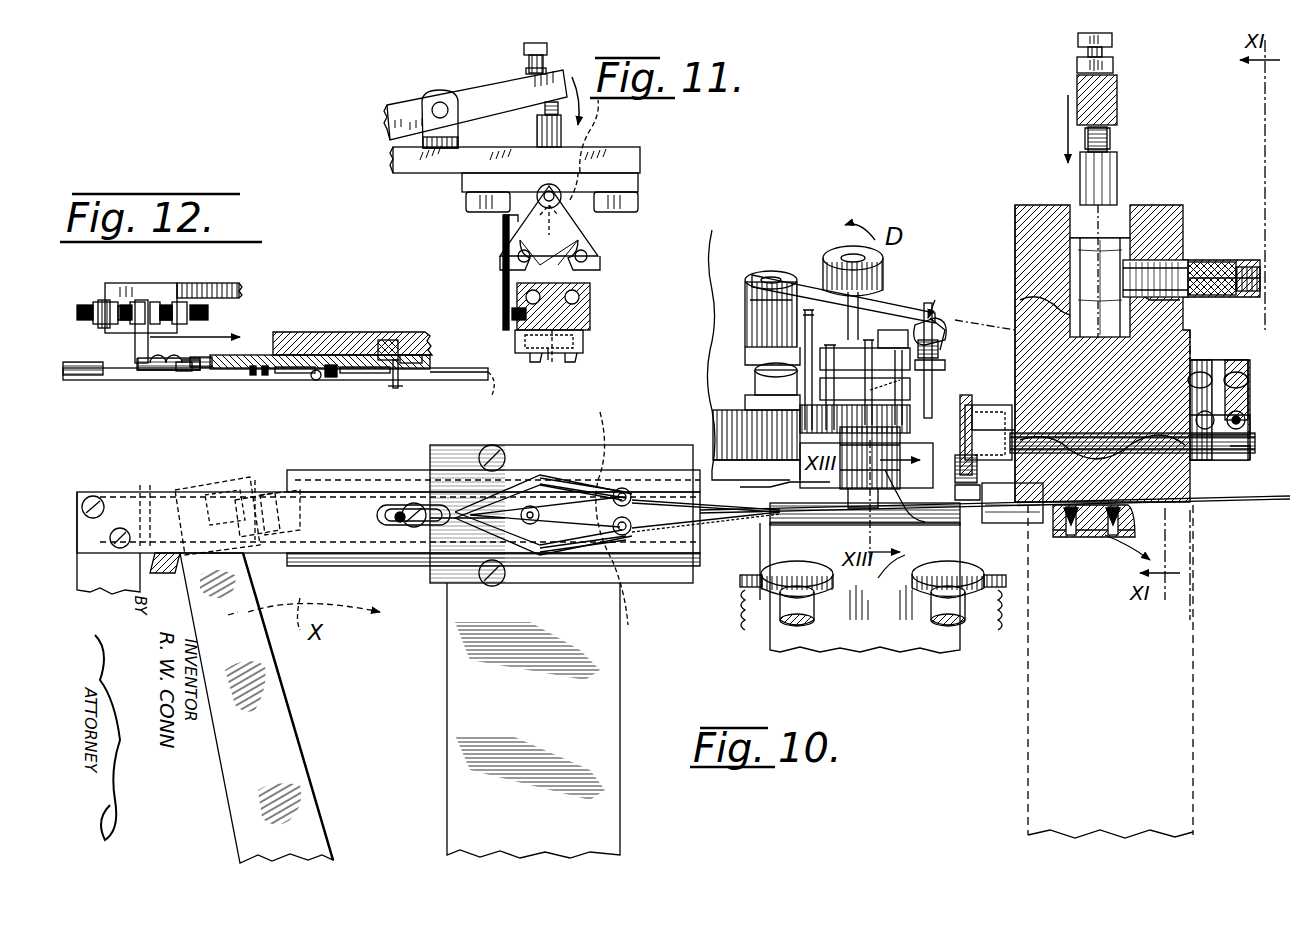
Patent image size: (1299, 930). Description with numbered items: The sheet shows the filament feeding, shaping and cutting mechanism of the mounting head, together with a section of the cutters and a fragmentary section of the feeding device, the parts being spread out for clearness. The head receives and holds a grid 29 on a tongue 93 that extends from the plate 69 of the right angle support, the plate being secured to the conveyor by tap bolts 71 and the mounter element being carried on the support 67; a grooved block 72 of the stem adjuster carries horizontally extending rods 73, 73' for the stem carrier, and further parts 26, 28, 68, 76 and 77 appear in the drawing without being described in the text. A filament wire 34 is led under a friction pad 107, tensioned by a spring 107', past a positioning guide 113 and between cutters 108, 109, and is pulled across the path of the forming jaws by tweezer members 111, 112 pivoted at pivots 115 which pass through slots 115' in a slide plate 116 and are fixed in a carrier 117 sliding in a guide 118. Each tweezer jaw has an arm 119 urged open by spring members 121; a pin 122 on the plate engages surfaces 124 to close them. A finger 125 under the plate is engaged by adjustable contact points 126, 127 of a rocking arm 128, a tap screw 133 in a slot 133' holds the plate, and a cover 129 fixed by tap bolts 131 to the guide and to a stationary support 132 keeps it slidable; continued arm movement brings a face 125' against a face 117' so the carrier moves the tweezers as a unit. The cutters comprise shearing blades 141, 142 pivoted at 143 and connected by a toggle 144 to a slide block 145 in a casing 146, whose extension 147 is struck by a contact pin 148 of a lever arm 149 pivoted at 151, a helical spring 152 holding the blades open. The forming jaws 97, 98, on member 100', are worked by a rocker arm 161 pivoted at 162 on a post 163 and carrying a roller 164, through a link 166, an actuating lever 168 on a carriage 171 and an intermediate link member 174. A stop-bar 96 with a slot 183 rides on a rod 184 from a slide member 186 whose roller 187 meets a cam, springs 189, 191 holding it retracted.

In FIG. 10, the frame 26 is at (740, 360).
In FIG. 10, the shaft 28 is at (945, 296).
In FIG. 10, the grid 29 is at (840, 480).
In FIG. 11, the filament wire 34 is at (562, 357).
In FIG. 10, the filament wire 34 is at (918, 505).
In FIG. 10, the support 67 is at (806, 455).
In FIG. 10, the bracket 68 is at (772, 638).
In FIG. 10, the plate 69 is at (752, 392).
In FIG. 10, the tap bolts 71 is at (762, 375).
In FIG. 10, the grooved block 72 is at (881, 602).
In FIG. 10, the horizontally extending rod 73 is at (797, 615).
In FIG. 10, the horizontally extending rod 73' is at (948, 615).
In FIG. 10, the spring 76 is at (745, 612).
In FIG. 10, the spring 77 is at (998, 612).
In FIG. 10, the tongue 93 is at (850, 500).
In FIG. 10, the stop-bar 96 is at (905, 440).
In FIG. 10, the lower gripper jaw 97 is at (900, 510).
In FIG. 10, the upper gripper jaw 98 is at (860, 510).
In FIG. 10, the carrier member 100' is at (950, 362).
In FIG. 11, the friction pad 107 is at (579, 338).
In FIG. 10, the friction pad 107 is at (1112, 521).
In FIG. 11, the spring 107' is at (488, 272).
In FIG. 10, the spring 107' is at (985, 316).
In FIG. 11, the cutter 108 is at (590, 318).
In FIG. 10, the cutter 108 is at (965, 500).
In FIG. 11, the cutter 109 is at (512, 318).
In FIG. 10, the cutter 109 is at (975, 552).
In FIG. 12, the tweezer member 111 is at (458, 374).
In FIG. 10, the tweezer member 111 is at (710, 508).
In FIG. 12, the tweezer member 112 is at (483, 393).
In FIG. 10, the tweezer member 112 is at (728, 520).
In FIG. 11, the positioning guide 113 is at (548, 365).
In FIG. 10, the positioning guide 113 is at (1013, 524).
In FIG. 12, the pivot 115 is at (398, 385).
In FIG. 10, the pivot 115 is at (636, 512).
In FIG. 12, the slot 115' is at (400, 329).
In FIG. 10, the slot 115' is at (631, 515).
In FIG. 12, the slide plate 116 is at (310, 355).
In FIG. 10, the slide plate 116 is at (500, 465).
In FIG. 12, the carrier 117 is at (250, 332).
In FIG. 10, the carrier 117 is at (388, 502).
In FIG. 12, the face 117' is at (198, 397).
In FIG. 10, the face 117' is at (490, 468).
In FIG. 12, the guide 118 is at (350, 332).
In FIG. 10, the guide 118 is at (648, 445).
In FIG. 12, the arm 119 is at (285, 374).
In FIG. 10, the arm 119 is at (575, 472).
In FIG. 12, the spring member 121 is at (365, 375).
In FIG. 10, the spring member 121 is at (592, 485).
In FIG. 12, the pin 122 is at (333, 378).
In FIG. 10, the pin 122 is at (540, 515).
In FIG. 10, the surface 124 is at (560, 478).
In FIG. 12, the finger 125 is at (159, 331).
In FIG. 10, the finger 125 is at (217, 504).
In FIG. 12, the face 125' is at (155, 397).
In FIG. 10, the face 125' is at (279, 483).
In FIG. 12, the adjustable contact point 126 is at (210, 322).
In FIG. 10, the adjustable contact point 126 is at (238, 500).
In FIG. 12, the adjustable contact point 127 is at (96, 308).
In FIG. 10, the adjustable contact point 127 is at (180, 490).
In FIG. 12, the arm 128 is at (210, 284).
In FIG. 10, the arm 128 is at (285, 715).
In FIG. 12, the cover 129 is at (185, 372).
In FIG. 10, the cover 129 is at (285, 553).
In FIG. 12, the tap bolts 131 is at (316, 381).
In FIG. 10, the tap bolts 131 is at (488, 448).
In FIG. 12, the stationary support 132 is at (88, 380).
In FIG. 10, the stationary support 132 is at (142, 568).
In FIG. 12, the tap screw 133 is at (273, 395).
In FIG. 10, the tap screw 133 is at (410, 480).
In FIG. 12, the slot 133' is at (249, 390).
In FIG. 10, the slot 133' is at (414, 561).
In FIG. 11, the shearing blade 141 is at (533, 362).
In FIG. 10, the shearing blade 141 is at (972, 405).
In FIG. 11, the shearing blade 142 is at (575, 362).
In FIG. 10, the shearing blade 142 is at (1015, 436).
In FIG. 11, the pivot 143 is at (526, 297).
In FIG. 10, the pivot 143 is at (1035, 420).
In FIG. 11, the toggle 144 is at (512, 262).
In FIG. 10, the toggle 144 is at (1240, 360).
In FIG. 11, the slide block 145 is at (588, 130).
In FIG. 10, the slide block 145 is at (1135, 245).
In FIG. 11, the casing 146 is at (580, 208).
In FIG. 10, the casing 146 is at (1030, 255).
In FIG. 11, the extension 147 is at (540, 134).
In FIG. 10, the extension 147 is at (1088, 176).
In FIG. 11, the contact pin 148 is at (546, 108).
In FIG. 10, the contact pin 148 is at (1108, 138).
In FIG. 11, the lever arm 149 is at (500, 90).
In FIG. 10, the lever arm 149 is at (1115, 88).
In FIG. 11, the pivot 151 is at (439, 102).
In FIG. 10, the helical spring 152 is at (1160, 292).
In FIG. 10, the rocker arm 161 is at (795, 282).
In FIG. 10, the pivot 162 is at (768, 276).
In FIG. 10, the post 163 is at (748, 290).
In FIG. 10, the roller 164 is at (848, 252).
In FIG. 10, the link 166 is at (952, 328).
In FIG. 10, the actuating lever 168 is at (850, 310).
In FIG. 10, the carriage 171 is at (915, 342).
In FIG. 10, the intermediate link member 174 is at (745, 300).
In FIG. 10, the slot 183 is at (893, 569).
In FIG. 10, the rod 184 is at (900, 379).
In FIG. 10, the slide member 186 is at (930, 302).
In FIG. 10, the roller 187 is at (878, 250).
In FIG. 10, the spring 189 is at (948, 330).
In FIG. 10, the spring 191 is at (745, 417).